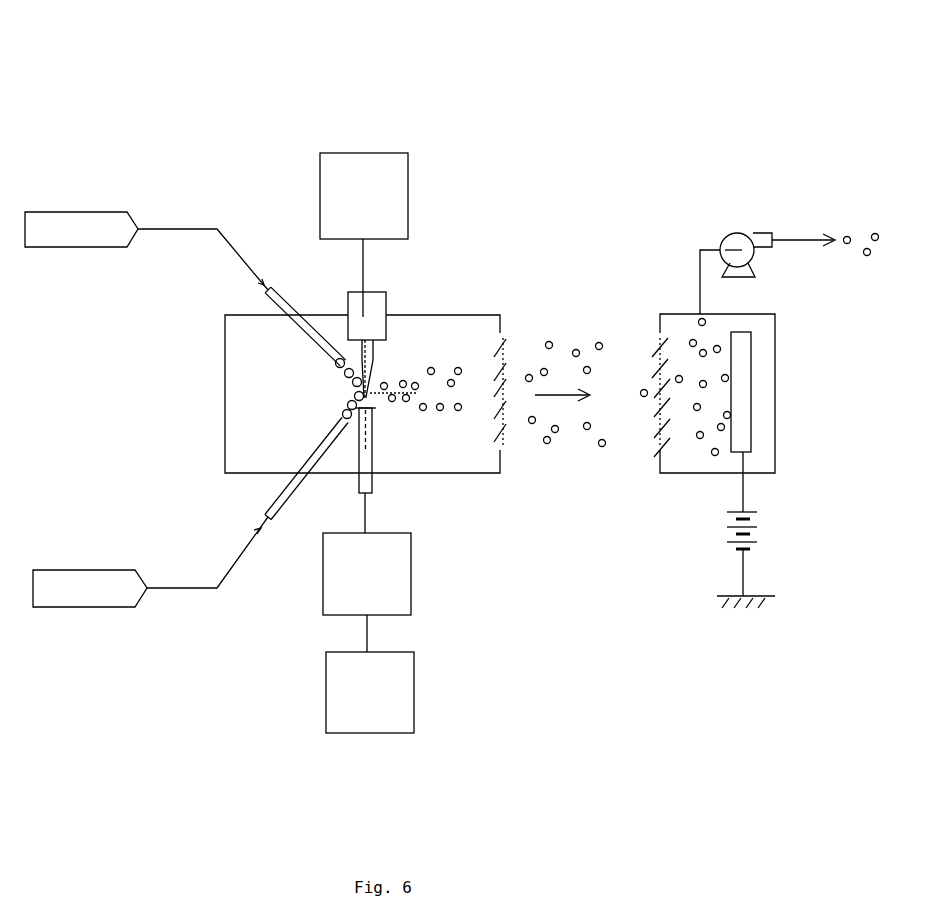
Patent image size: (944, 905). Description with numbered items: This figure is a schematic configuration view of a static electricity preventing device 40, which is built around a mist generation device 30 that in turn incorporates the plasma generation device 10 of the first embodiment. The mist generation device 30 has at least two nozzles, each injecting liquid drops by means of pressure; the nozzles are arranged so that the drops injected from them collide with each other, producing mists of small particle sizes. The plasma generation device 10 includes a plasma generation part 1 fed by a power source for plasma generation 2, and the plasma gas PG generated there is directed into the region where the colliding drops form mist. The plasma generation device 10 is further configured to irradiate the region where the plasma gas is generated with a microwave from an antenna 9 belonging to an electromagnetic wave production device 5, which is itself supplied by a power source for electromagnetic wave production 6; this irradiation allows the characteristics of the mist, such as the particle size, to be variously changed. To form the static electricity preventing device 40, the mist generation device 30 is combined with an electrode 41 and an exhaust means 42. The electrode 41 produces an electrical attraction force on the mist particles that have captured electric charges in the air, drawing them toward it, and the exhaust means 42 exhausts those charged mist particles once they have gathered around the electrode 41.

The mist generation device 30 is at (160, 133).
The plasma generation device 10 is at (282, 148).
The power source for plasma generation 2 is at (408, 187).
The plasma generation part 1 is at (387, 307).
The plasma gas PG is at (375, 378).
The antenna 9 is at (372, 451).
The electromagnetic wave production device 5 is at (411, 574).
The power source for electromagnetic wave production 6 is at (414, 697).
The static electricity preventing device 40 is at (573, 125).
The electrode 41 is at (750, 385).
The exhaust means 42 is at (730, 233).